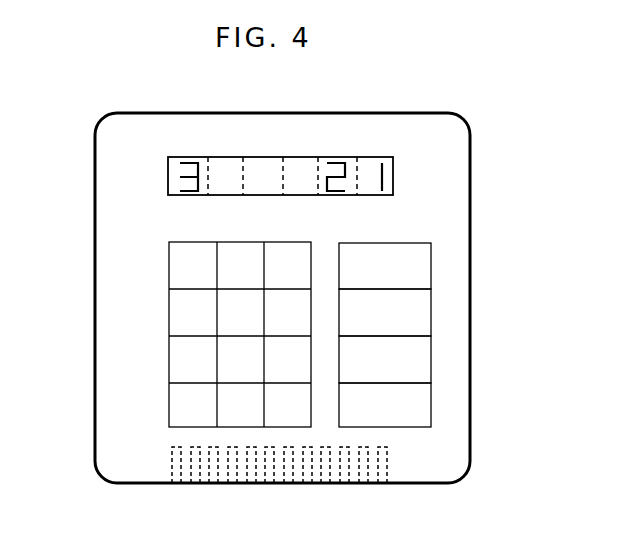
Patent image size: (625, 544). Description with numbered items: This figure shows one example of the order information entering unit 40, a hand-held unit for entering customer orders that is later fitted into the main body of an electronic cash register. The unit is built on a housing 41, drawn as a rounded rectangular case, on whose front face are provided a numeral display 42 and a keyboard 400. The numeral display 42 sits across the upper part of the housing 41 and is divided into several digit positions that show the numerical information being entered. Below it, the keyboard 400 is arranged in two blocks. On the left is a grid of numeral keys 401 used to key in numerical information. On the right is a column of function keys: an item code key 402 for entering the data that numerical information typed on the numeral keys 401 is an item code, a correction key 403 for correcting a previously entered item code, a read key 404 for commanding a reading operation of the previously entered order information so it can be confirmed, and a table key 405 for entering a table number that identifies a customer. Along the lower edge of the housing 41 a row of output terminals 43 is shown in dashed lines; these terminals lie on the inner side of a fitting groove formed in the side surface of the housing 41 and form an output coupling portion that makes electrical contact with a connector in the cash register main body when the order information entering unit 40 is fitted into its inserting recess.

The order information entering unit 40 is at (474, 155).
The housing 41 is at (453, 208).
The numeral display 42 is at (168, 172).
The output terminals 43 is at (343, 478).
The keyboard 400 is at (523, 234).
The numeral keys 401 is at (149, 364).
The item code key 402 is at (431, 270).
The correction key 403 is at (431, 315).
The read key 404 is at (431, 360).
The table key 405 is at (431, 402).